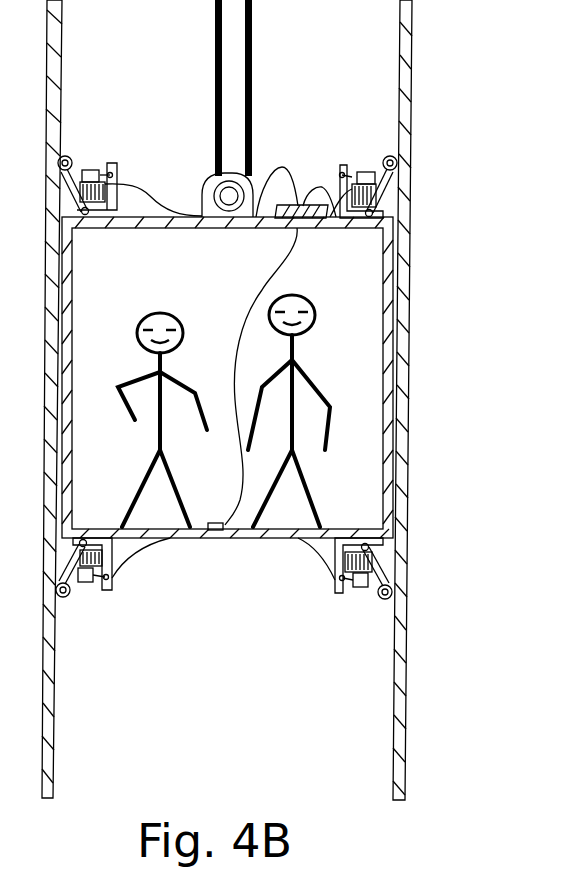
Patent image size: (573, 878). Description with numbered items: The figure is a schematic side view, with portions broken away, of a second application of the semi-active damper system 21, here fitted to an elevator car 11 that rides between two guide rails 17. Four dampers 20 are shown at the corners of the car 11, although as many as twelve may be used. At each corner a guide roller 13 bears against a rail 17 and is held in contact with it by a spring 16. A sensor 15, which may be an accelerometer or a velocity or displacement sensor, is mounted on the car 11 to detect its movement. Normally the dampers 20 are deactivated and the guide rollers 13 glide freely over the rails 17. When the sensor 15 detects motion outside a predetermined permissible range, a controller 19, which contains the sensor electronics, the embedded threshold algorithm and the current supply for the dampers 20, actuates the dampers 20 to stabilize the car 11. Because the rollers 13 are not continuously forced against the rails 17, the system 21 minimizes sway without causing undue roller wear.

The elevator car 11 is at (395, 371).
The guide rollers 13 is at (67, 157).
The sensor 15 is at (222, 552).
The springs 16 is at (102, 194).
The rails 17 is at (53, 730).
The controller 19 is at (299, 204).
The dampers 20 is at (90, 170).
The system 21 is at (309, 158).